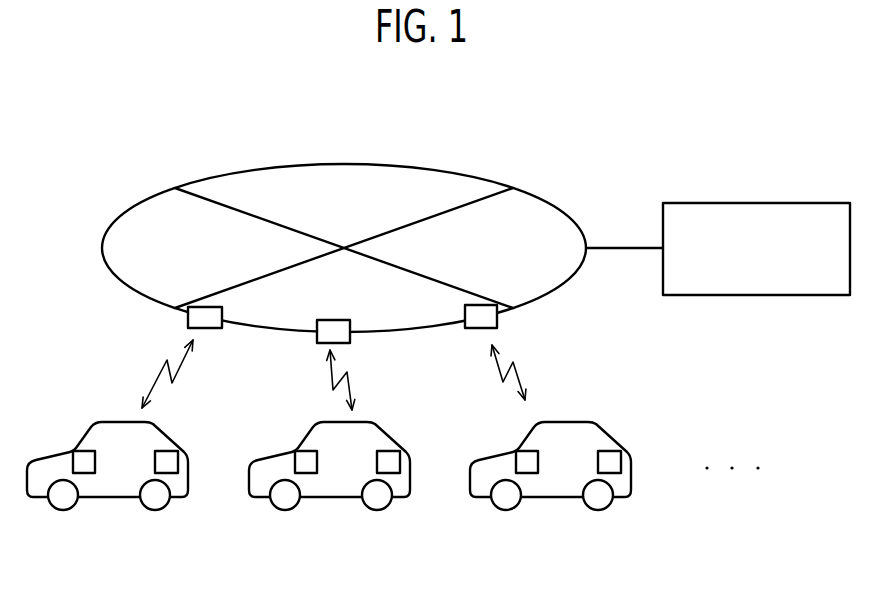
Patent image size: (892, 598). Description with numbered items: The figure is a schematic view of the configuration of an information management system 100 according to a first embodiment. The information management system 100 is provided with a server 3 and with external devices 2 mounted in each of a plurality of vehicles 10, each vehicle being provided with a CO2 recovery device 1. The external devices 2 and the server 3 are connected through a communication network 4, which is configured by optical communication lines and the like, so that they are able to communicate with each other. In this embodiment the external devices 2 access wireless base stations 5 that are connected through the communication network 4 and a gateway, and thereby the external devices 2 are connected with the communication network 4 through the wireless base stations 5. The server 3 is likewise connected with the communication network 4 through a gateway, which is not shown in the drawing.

The information management system 100 is at (555, 147).
The CO2 recovery device 1 is at (178, 465).
The external device 2 is at (73, 466).
The server 3 is at (754, 203).
The communication network 4 is at (103, 248).
The wireless base station 5 is at (212, 328).
The vehicle 10 is at (110, 497).